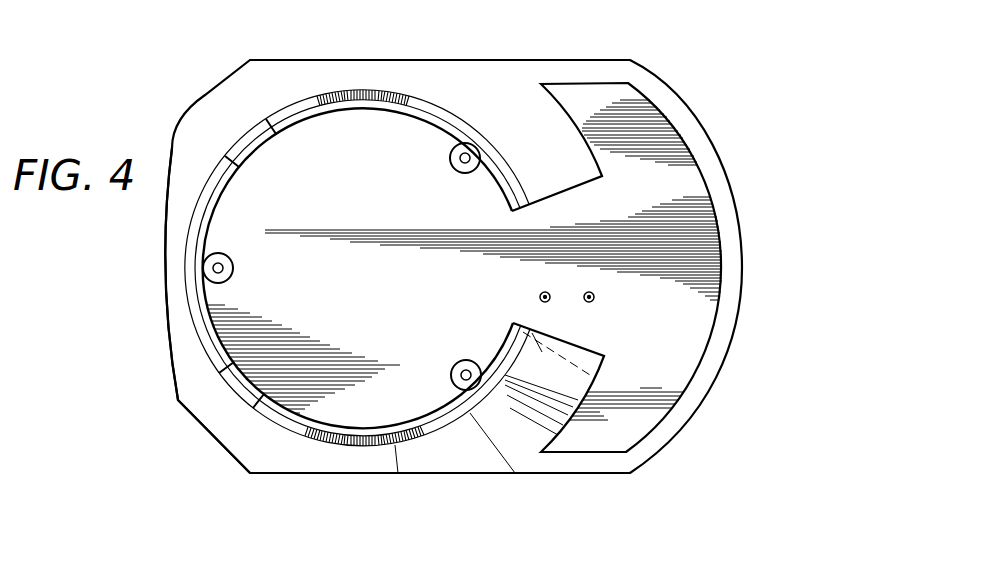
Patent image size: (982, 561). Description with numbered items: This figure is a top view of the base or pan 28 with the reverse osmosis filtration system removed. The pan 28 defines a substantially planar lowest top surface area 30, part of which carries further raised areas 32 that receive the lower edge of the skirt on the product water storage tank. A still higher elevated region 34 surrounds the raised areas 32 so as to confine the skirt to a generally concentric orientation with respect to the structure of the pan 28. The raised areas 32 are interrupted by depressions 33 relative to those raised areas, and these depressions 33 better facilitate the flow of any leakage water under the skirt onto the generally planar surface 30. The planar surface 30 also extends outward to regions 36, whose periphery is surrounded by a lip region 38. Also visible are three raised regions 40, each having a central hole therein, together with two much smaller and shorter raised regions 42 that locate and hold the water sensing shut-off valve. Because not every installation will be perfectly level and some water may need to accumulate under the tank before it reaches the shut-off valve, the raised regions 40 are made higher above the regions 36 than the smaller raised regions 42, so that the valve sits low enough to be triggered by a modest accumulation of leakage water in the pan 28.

The pan 28 is at (712, 92).
The lowest top surface area 30 is at (370, 230).
The raised areas 32 is at (330, 105).
The depressions 33 is at (242, 147).
The elevated region 34 is at (220, 407).
The regions 36 is at (670, 182).
The lip region 38 is at (683, 405).
The raised regions 40 is at (458, 135).
The smaller raised regions 42 is at (545, 302).